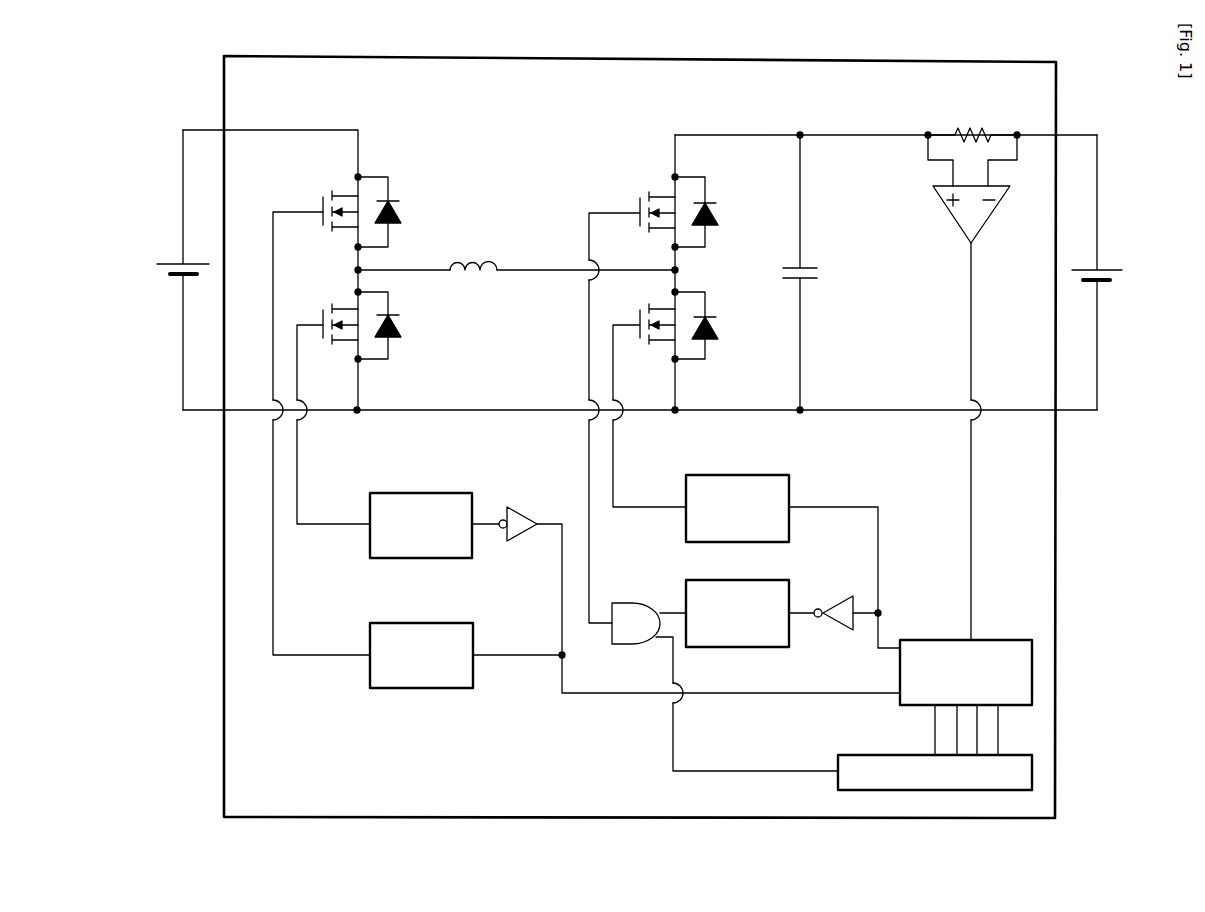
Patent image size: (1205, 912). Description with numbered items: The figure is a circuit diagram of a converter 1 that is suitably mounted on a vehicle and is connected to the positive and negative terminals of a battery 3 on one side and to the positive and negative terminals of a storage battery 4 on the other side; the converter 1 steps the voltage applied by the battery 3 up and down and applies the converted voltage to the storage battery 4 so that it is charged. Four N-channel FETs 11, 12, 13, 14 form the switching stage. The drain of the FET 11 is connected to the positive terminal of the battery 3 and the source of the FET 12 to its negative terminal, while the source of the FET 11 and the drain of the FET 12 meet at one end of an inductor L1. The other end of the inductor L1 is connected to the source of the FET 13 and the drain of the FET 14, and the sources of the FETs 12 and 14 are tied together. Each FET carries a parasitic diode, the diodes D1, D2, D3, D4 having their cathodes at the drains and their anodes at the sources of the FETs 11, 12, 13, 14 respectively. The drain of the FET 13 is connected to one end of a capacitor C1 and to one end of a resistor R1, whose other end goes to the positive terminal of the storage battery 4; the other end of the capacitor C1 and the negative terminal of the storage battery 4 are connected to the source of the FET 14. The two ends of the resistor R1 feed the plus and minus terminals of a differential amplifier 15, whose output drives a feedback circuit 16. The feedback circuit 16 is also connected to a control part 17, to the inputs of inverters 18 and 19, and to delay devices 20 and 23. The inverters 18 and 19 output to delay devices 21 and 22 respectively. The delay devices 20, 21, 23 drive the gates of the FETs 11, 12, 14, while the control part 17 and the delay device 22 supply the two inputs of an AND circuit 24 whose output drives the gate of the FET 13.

The converter 1 is at (223, 72).
The battery 3 is at (172, 257).
The storage battery 4 is at (1103, 260).
The FET 11 is at (324, 192).
The FET 12 is at (324, 305).
The FET 13 is at (641, 192).
The FET 14 is at (629, 332).
The diode D1 is at (415, 205).
The diode D2 is at (415, 320).
The diode D3 is at (736, 205).
The diode D4 is at (736, 320).
The inductor L1 is at (488, 258).
The capacitor C1 is at (824, 268).
The resistor R1 is at (977, 128).
The differential amplifier 15 is at (948, 222).
The feedback circuit 16 is at (930, 640).
The control part 17 is at (908, 752).
The inverter 18 is at (523, 505).
The inverter 19 is at (838, 595).
The delay device 20 is at (381, 623).
The delay device 21 is at (381, 493).
The delay device 22 is at (696, 578).
The delay device 23 is at (696, 475).
The AND circuit 24 is at (615, 637).